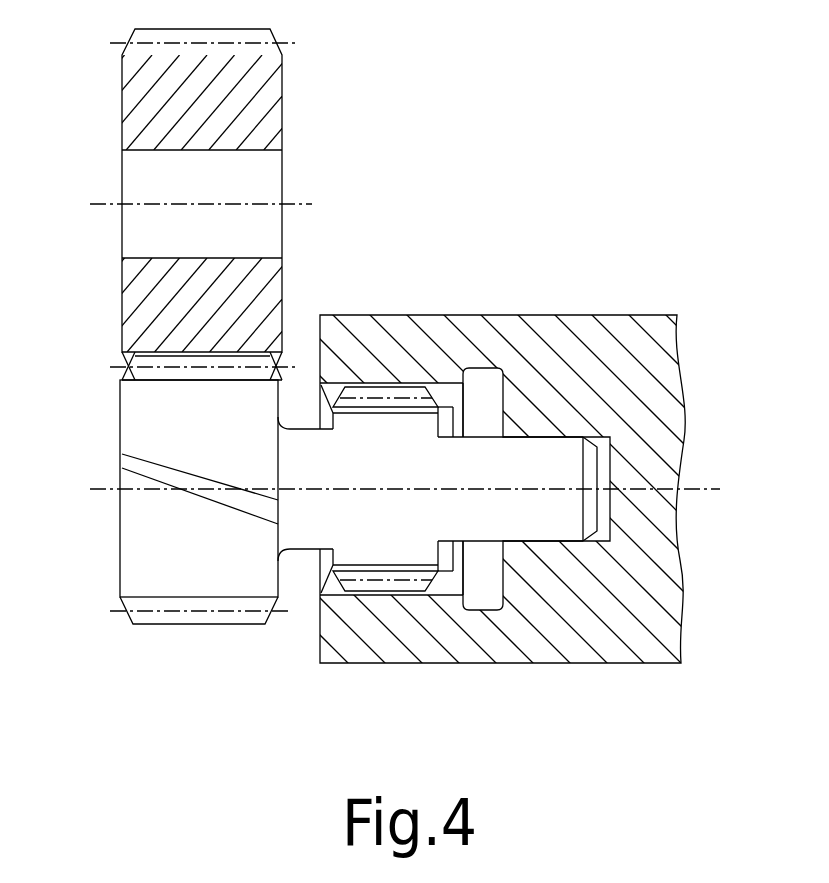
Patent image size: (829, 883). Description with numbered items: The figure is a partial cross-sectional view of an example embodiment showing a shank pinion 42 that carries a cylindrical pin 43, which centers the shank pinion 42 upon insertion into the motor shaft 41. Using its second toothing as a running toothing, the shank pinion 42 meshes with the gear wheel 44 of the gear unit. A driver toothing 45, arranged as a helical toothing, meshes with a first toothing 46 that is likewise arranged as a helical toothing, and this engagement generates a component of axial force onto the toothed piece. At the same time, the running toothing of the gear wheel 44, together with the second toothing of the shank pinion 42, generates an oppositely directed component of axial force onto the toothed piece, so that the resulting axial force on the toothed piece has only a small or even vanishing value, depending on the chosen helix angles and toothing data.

The motor shaft 41 is at (600, 640).
The shank pinion 42 is at (117, 643).
The cylindrical pin 43 is at (487, 510).
The gear wheel 44 is at (262, 108).
The driver toothing 45 is at (443, 388).
The first toothing 46 is at (357, 392).